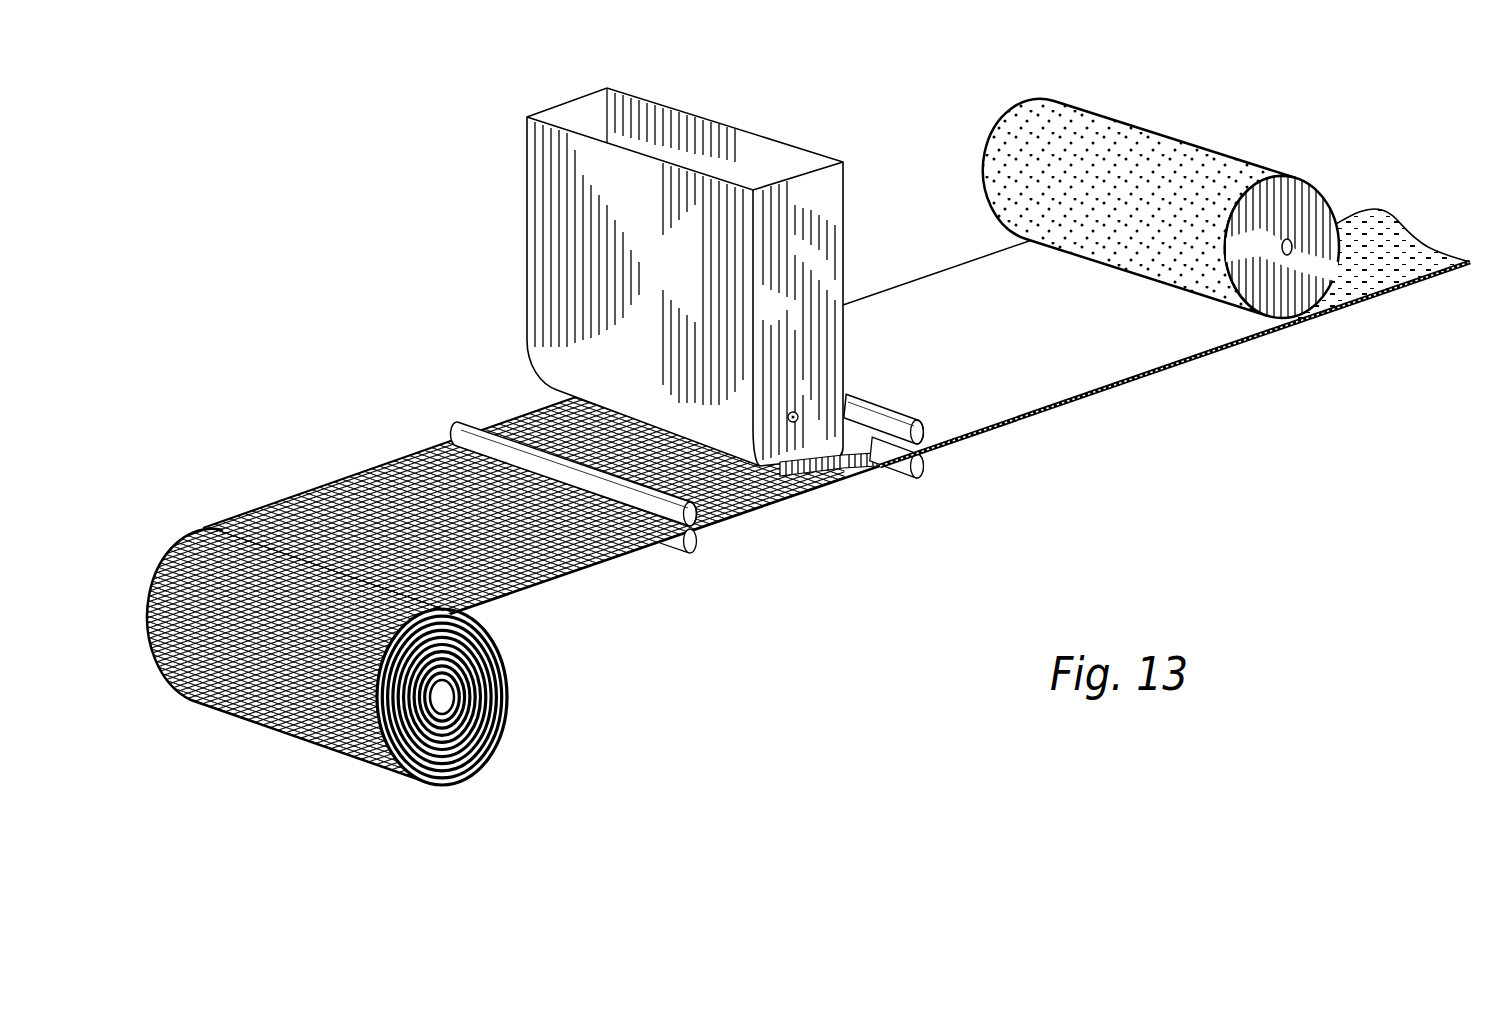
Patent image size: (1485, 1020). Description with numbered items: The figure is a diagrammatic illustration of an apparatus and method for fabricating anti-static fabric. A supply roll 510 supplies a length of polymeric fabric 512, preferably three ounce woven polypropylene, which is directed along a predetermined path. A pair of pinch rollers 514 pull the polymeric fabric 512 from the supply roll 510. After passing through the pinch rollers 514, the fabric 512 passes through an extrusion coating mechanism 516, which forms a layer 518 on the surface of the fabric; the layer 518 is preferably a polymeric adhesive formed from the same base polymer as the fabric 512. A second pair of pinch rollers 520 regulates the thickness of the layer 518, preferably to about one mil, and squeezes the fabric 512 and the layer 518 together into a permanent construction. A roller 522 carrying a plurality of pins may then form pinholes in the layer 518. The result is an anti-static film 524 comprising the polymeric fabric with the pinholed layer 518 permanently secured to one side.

The supply roll 510 is at (482, 768).
The polymeric fabric 512 is at (562, 601).
The pinch rollers 514 is at (697, 525).
The extrusion coating mechanism 516 is at (514, 272).
The layer 518 is at (995, 356).
The pinch rollers 520 is at (927, 467).
The roller 522 is at (1313, 266).
The anti-static film 524 is at (1432, 280).